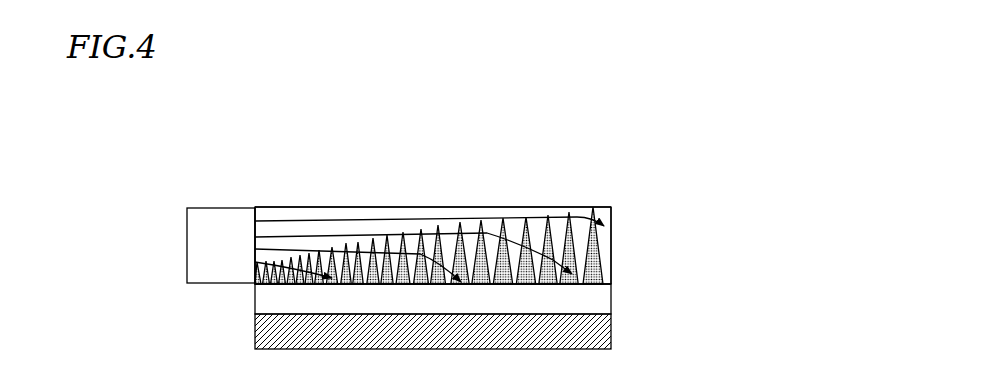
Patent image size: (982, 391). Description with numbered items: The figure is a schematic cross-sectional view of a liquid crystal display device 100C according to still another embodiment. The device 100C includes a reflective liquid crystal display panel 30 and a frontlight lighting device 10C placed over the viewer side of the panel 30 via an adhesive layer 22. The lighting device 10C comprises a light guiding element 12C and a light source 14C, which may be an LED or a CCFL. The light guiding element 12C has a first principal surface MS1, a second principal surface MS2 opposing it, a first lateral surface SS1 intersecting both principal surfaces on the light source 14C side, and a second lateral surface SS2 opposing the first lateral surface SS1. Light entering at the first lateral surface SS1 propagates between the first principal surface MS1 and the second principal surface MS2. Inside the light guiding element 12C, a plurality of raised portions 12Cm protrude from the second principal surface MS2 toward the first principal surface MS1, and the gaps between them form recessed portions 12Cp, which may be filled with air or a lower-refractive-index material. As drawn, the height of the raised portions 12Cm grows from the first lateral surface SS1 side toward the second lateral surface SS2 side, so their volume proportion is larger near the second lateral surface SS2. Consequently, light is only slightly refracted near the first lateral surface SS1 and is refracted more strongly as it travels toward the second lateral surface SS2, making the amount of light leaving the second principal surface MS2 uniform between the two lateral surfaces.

The liquid crystal display device 100C is at (682, 154).
The lighting device 10C is at (622, 208).
The light guiding element 12C is at (429, 190).
The raised portions 12Cm is at (512, 217).
The recessed portions 12Cp is at (571, 213).
The light source 14C is at (224, 216).
The first principal surface MS1 is at (325, 206).
The second principal surface MS2 is at (273, 284).
The first lateral surface SS1 is at (253, 232).
The second lateral surface SS2 is at (615, 207).
The adhesive layer 22 is at (595, 305).
The reflective liquid crystal display panel 30 is at (595, 333).